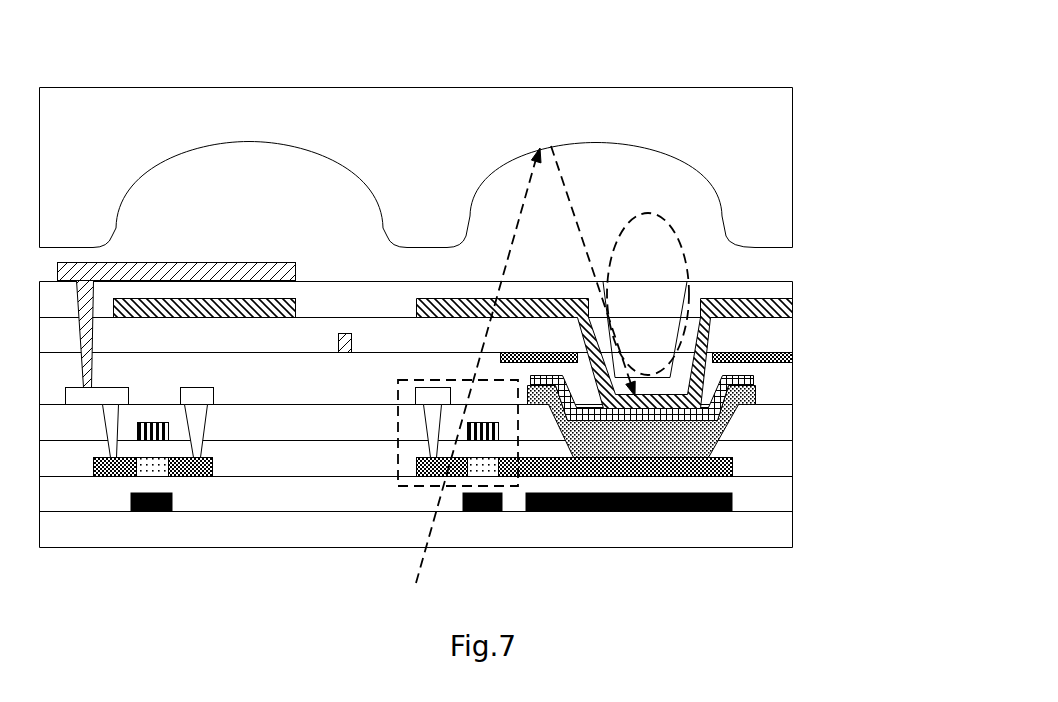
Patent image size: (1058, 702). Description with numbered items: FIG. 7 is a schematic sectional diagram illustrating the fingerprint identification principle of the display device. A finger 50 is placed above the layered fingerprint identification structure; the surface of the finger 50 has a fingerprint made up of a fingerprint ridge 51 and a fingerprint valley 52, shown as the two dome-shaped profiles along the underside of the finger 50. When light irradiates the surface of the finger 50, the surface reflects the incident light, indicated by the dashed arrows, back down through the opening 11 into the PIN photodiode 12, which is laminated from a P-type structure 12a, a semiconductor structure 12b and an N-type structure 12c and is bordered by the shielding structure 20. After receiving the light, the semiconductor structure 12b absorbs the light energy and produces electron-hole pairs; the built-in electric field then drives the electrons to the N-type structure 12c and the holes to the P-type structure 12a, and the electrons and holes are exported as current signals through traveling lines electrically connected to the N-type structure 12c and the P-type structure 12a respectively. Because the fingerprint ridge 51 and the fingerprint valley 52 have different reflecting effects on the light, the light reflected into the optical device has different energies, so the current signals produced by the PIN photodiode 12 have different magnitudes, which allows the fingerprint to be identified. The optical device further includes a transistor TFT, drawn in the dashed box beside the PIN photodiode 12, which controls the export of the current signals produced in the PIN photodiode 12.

The finger 50 is at (416, 133).
The fingerprint ridge 51 is at (428, 244).
The fingerprint valley 52 is at (630, 142).
The opening 11 is at (673, 228).
The shielding structure 20 is at (780, 349).
The PIN photodiode 12 is at (706, 383).
The P-type structure 12a is at (757, 397).
The semiconductor structure 12b is at (756, 379).
The N-type structure 12c is at (782, 308).
The transistor TFT is at (398, 485).